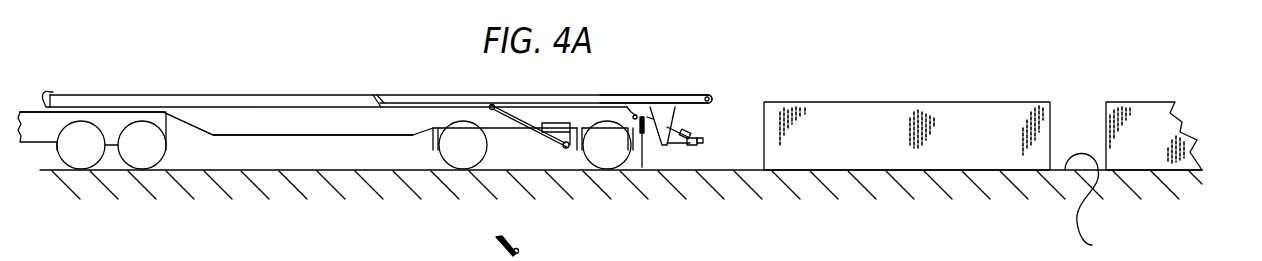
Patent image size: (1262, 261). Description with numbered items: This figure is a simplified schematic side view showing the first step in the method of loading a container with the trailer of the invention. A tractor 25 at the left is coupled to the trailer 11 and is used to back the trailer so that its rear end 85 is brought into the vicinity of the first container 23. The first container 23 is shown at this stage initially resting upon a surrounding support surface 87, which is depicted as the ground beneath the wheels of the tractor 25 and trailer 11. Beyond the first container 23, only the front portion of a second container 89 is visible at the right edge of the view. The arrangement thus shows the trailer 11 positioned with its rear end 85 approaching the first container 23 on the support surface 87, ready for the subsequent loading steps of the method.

The trailer 11 is at (422, 81).
The tractor 25 is at (112, 123).
The rear end 85 is at (715, 100).
The first container 23 is at (887, 113).
The second container 89 is at (1158, 120).
The support surface 87 is at (1090, 207).